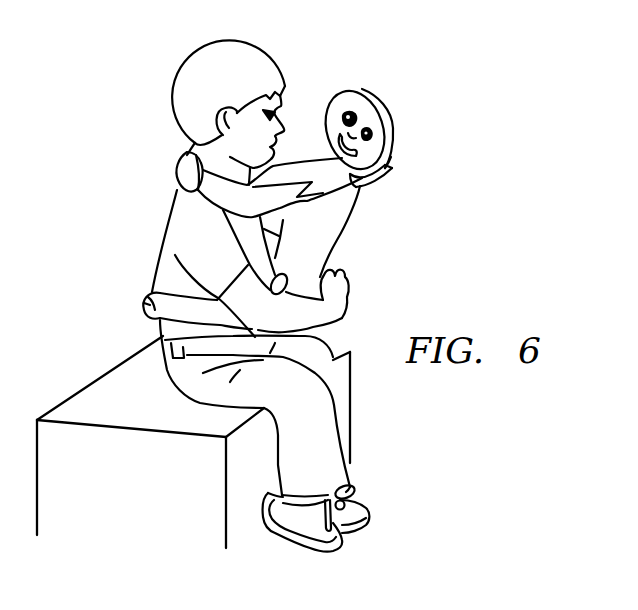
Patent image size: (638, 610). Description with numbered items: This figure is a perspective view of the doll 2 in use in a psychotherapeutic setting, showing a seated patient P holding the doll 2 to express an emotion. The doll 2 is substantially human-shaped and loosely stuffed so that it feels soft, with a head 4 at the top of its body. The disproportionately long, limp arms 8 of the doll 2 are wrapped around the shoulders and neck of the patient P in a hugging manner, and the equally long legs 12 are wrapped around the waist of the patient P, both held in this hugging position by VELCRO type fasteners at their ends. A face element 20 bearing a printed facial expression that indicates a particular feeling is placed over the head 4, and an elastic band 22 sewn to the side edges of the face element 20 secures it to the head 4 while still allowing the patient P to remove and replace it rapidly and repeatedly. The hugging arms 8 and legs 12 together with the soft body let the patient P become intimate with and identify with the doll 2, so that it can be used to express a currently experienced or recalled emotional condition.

The patient P is at (176, 92).
The doll 2 is at (337, 245).
The head 4 is at (393, 107).
The arms 8 is at (176, 165).
The legs 12 is at (143, 300).
The face element 20 is at (338, 95).
The elastic band 22 is at (396, 162).